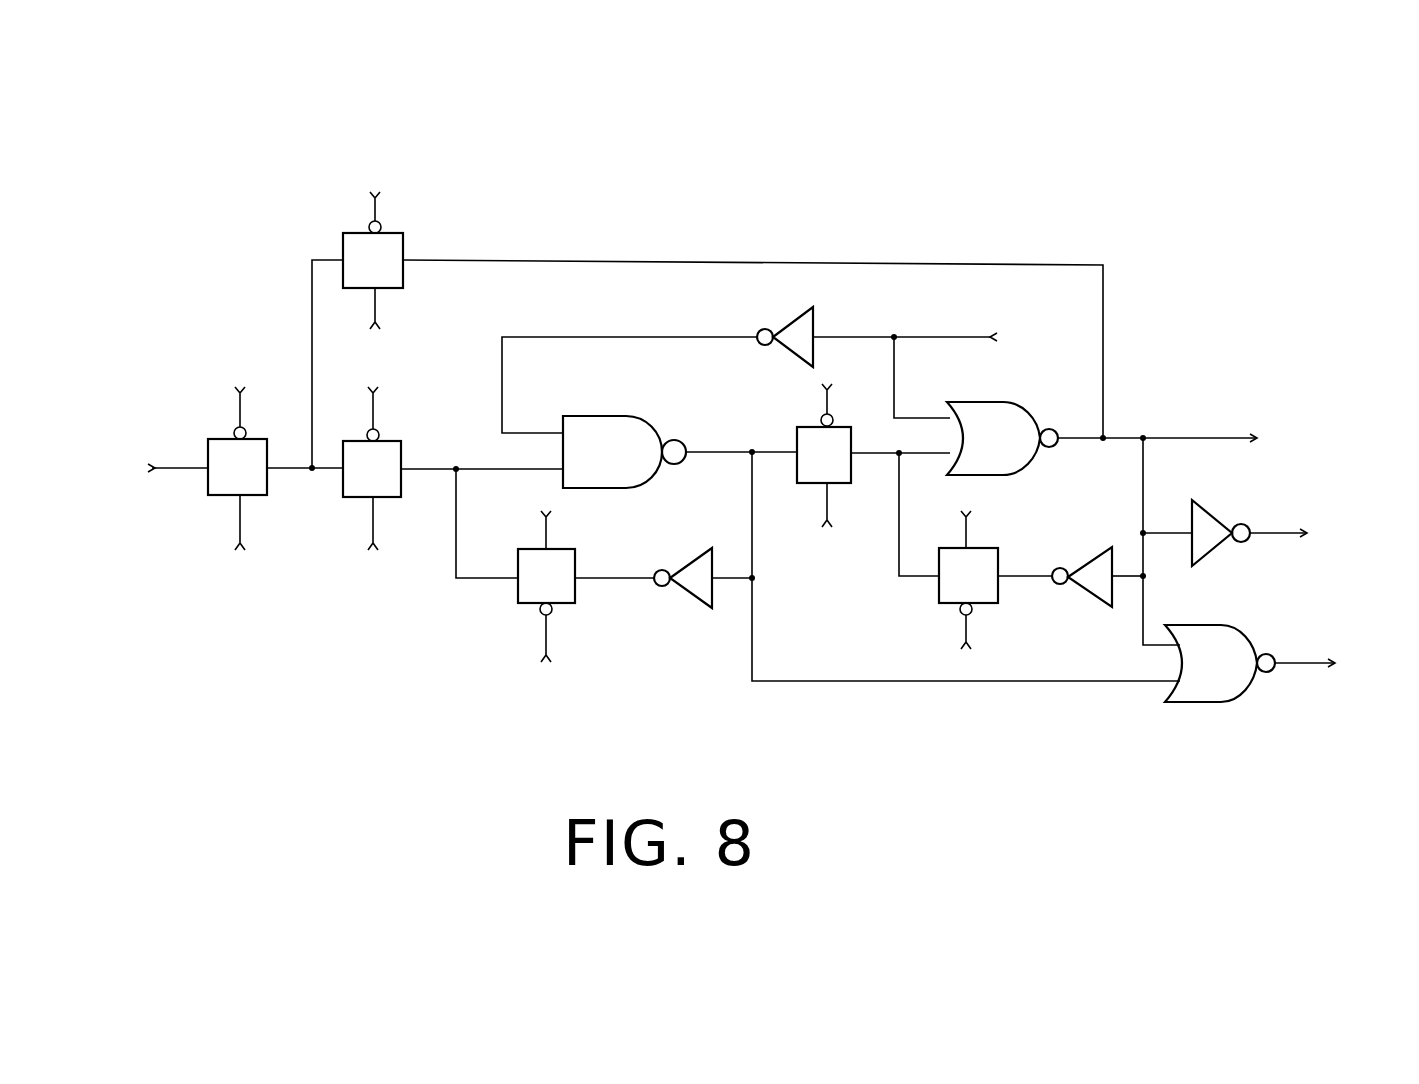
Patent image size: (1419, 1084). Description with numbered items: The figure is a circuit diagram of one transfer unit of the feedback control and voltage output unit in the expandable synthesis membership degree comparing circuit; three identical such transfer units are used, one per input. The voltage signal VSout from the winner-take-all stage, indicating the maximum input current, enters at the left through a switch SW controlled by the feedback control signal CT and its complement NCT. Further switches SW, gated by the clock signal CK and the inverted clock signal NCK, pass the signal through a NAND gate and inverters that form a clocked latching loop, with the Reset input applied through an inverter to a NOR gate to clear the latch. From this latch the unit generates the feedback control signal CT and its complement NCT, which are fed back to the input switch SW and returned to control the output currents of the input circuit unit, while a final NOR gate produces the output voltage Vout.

The switch SW is at (603, 418).
The feedback control signal CT is at (782, 375).
The inverted feedback control signal NCT is at (762, 371).
The clock signal CK is at (668, 527).
The inverted clock signal NCK is at (666, 516).
The voltage signal VSout is at (139, 469).
The output voltage Vout is at (1336, 665).
The reset signal Reset is at (987, 341).